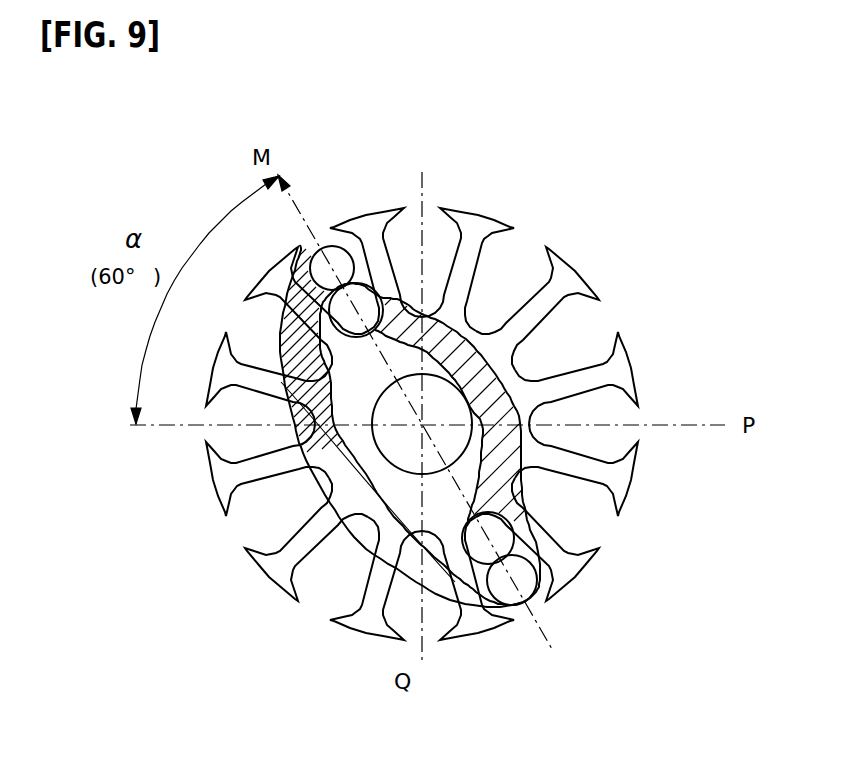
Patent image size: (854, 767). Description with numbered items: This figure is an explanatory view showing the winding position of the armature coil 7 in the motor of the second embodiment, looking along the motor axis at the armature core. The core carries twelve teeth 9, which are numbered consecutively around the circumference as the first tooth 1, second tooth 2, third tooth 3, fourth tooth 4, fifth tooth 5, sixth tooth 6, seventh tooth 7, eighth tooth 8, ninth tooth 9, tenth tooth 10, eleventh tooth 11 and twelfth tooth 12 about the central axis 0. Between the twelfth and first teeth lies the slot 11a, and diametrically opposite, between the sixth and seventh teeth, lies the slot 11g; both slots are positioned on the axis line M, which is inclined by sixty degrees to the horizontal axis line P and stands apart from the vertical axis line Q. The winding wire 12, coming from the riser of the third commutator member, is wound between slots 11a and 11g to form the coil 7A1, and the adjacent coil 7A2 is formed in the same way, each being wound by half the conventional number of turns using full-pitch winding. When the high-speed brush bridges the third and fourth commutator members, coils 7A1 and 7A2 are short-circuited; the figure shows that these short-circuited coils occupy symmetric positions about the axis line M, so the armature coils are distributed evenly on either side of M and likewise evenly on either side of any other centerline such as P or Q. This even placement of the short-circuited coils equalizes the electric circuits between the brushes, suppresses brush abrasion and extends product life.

The center axis O 0 is at (422, 424).
The stator tooth 1 is at (376, 269).
The stator tooth 2 is at (468, 269).
The stator tooth 3 is at (537, 308).
The stator tooth 4 is at (576, 378).
The stator tooth 5 is at (576, 470).
The stator tooth 6 is at (537, 539).
The armature coil 7 is at (468, 578).
The stator tooth 8 is at (376, 578).
The teeth 9 is at (306, 539).
The stator tooth 10 is at (267, 470).
The stator tooth 11 is at (267, 378).
The winding wire 12 is at (306, 308).
The coil 7A1 is at (357, 308).
The coil 7A2 is at (331, 265).
The slot 11a is at (348, 290).
The slot 11g is at (547, 600).